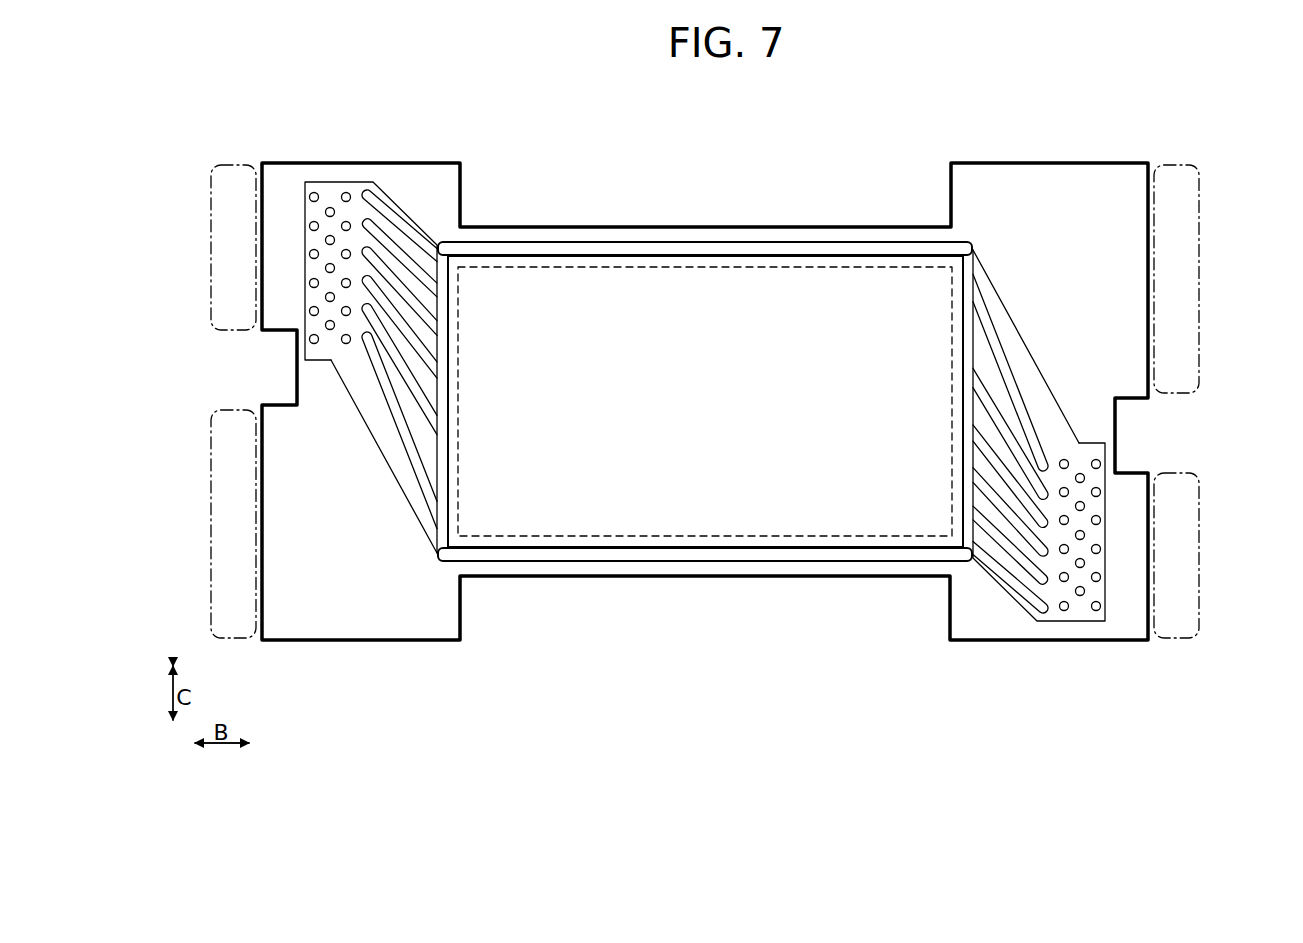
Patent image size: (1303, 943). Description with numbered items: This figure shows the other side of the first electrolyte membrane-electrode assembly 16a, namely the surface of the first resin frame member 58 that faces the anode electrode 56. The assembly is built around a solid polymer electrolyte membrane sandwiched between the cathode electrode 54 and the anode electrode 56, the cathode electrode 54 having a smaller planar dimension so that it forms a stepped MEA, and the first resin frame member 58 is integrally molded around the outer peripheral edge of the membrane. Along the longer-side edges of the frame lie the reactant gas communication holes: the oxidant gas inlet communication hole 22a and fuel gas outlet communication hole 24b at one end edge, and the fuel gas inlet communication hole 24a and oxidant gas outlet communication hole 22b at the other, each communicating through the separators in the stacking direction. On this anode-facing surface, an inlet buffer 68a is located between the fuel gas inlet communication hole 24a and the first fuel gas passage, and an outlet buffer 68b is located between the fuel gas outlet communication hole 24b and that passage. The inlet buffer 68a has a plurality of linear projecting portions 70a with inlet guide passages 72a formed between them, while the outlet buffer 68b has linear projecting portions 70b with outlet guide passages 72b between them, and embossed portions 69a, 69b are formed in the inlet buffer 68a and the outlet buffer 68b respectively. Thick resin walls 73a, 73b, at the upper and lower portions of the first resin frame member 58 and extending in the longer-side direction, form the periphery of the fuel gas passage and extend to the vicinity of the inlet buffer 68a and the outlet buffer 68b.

The first electrolyte membrane-electrode assembly 16a is at (782, 92).
The first resin frame member 58 is at (975, 160).
The cathode electrode 54 is at (608, 300).
The anode electrode 56 is at (542, 300).
The resin wall 73a is at (729, 248).
The resin wall 73b is at (693, 552).
The inlet buffer 68a is at (407, 184).
The outlet buffer 68b is at (1007, 616).
The embossed portions 69a is at (312, 342).
The embossed portions 69b is at (1100, 460).
The linear projecting portions 70a is at (413, 462).
The linear projecting portions 70b is at (993, 340).
The inlet guide passages 72a is at (417, 428).
The outlet guide passages 72b is at (1000, 390).
The fuel gas inlet communication hole 24a is at (222, 265).
The fuel gas outlet communication hole 24b is at (1188, 578).
The oxidant gas inlet communication hole 22a is at (1188, 265).
The oxidant gas outlet communication hole 22b is at (223, 578).